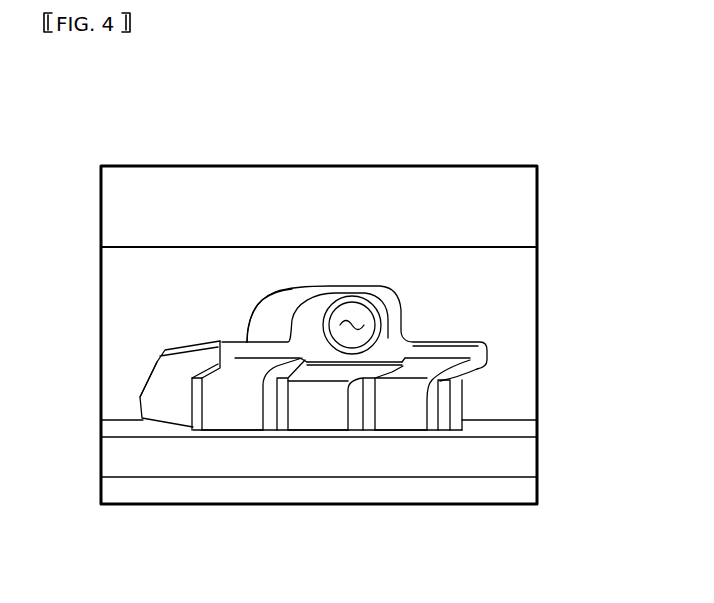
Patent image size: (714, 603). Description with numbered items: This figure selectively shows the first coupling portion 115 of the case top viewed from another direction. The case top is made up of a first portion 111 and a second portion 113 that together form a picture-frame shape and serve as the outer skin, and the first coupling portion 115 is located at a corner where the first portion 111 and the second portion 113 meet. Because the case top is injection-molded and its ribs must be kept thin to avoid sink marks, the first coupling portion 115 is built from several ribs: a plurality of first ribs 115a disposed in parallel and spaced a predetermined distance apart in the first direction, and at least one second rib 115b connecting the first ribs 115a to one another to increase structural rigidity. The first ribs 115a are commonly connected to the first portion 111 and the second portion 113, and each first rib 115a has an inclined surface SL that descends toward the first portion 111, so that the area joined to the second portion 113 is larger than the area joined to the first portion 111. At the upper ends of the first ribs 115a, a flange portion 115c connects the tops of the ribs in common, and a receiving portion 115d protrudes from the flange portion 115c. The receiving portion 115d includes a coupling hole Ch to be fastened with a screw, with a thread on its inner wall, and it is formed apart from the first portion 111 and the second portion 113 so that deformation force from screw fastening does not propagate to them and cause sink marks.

The first portion 111 is at (205, 265).
The second portion 113 is at (515, 472).
The first coupling portion 115 is at (263, 339).
The first ribs 115a is at (201, 430).
The second rib 115b is at (232, 415).
The flange portion 115c is at (175, 350).
The receiving portion 115d is at (283, 303).
The coupling hole Ch is at (353, 322).
The inclined surface SL is at (150, 376).